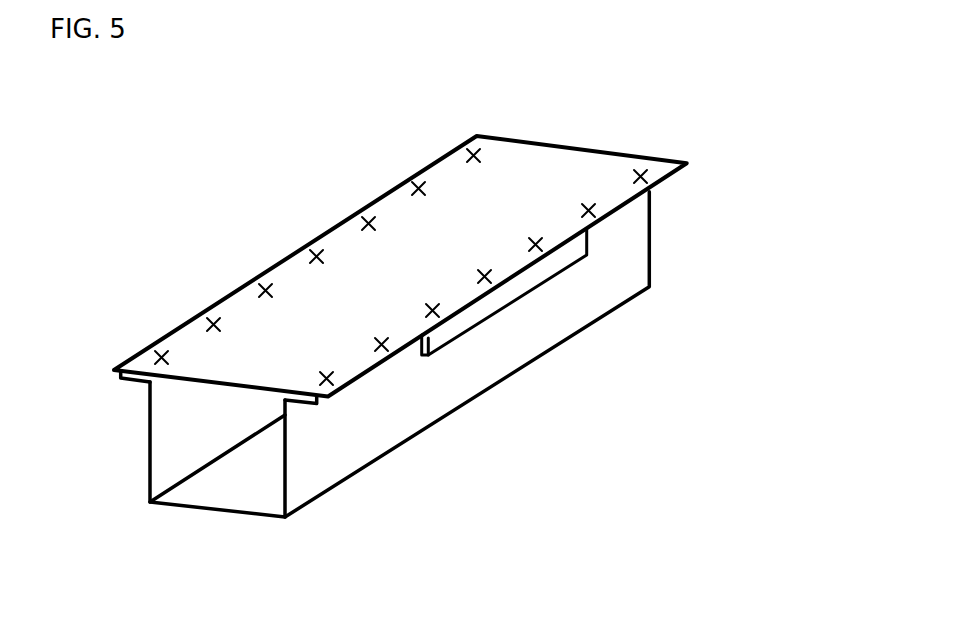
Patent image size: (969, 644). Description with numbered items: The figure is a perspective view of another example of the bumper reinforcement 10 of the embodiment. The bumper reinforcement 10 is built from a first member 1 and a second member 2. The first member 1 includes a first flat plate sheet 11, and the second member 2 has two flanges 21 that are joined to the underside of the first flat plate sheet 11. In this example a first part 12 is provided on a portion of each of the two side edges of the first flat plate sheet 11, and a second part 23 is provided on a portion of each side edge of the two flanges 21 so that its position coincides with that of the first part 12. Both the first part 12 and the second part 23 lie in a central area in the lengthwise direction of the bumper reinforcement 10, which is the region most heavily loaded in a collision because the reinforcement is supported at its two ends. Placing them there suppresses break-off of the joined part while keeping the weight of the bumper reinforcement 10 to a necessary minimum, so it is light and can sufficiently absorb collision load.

The bumper reinforcement 10 is at (655, 140).
The first member 1 is at (427, 158).
The first flat plate sheet 11 is at (533, 153).
The first part 12 is at (485, 313).
The second part 23 is at (420, 337).
The second member 2 is at (655, 243).
The flanges 21 is at (138, 378).